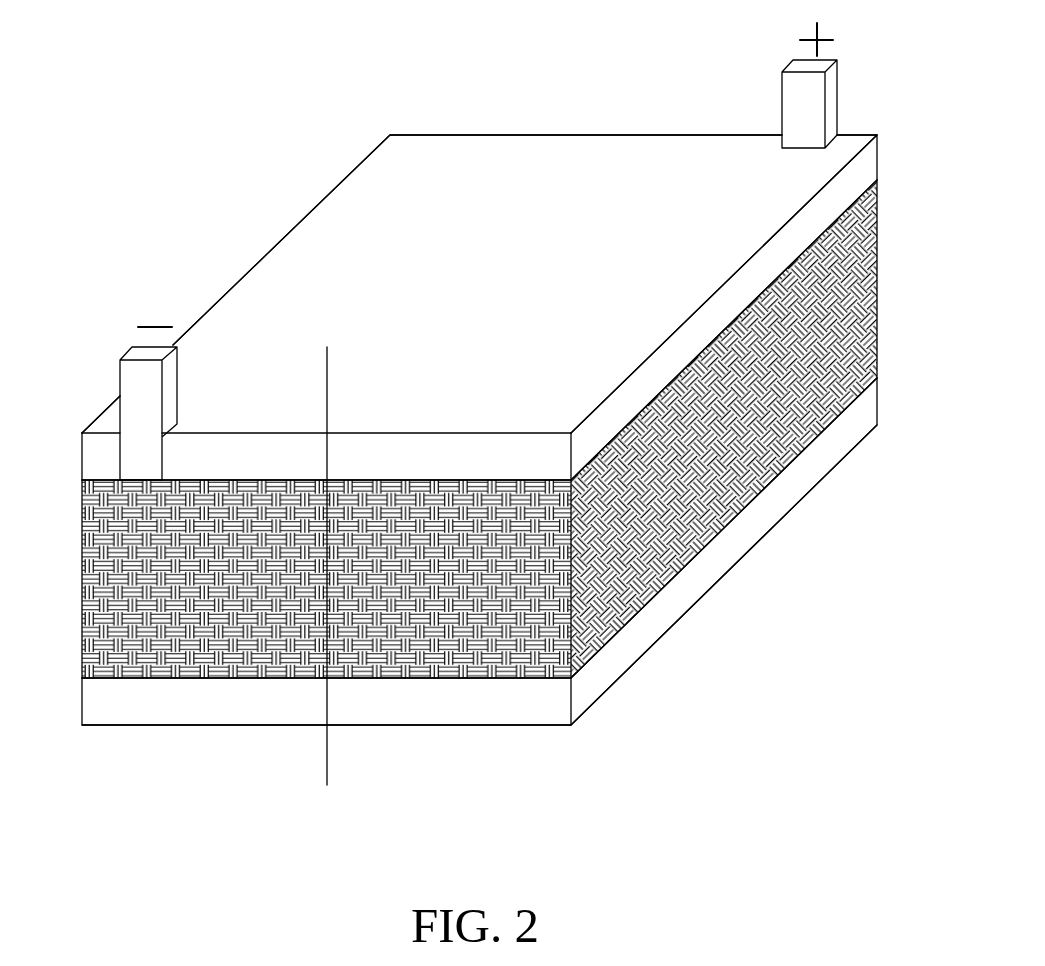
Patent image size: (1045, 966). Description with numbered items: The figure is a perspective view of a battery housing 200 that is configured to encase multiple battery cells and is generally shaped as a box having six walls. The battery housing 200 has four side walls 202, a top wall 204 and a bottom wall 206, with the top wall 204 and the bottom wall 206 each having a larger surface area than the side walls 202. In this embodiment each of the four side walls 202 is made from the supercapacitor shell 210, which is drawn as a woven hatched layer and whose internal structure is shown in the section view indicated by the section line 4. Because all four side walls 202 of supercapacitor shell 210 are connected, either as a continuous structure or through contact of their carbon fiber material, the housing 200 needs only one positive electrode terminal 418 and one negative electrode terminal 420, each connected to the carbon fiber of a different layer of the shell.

The battery housing 200 is at (156, 58).
The side walls 202 is at (95, 553).
The top wall 204 is at (570, 295).
The bottom wall 206 is at (730, 547).
The supercapacitor shell 210 is at (259, 599).
The positive electrode terminal 418 is at (818, 96).
The negative electrode terminal 420 is at (128, 380).
The section line 4- 4 is at (262, 785).